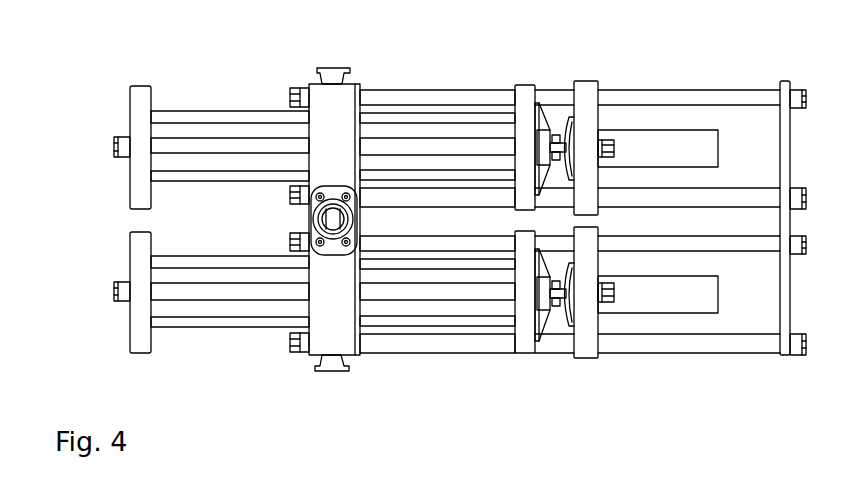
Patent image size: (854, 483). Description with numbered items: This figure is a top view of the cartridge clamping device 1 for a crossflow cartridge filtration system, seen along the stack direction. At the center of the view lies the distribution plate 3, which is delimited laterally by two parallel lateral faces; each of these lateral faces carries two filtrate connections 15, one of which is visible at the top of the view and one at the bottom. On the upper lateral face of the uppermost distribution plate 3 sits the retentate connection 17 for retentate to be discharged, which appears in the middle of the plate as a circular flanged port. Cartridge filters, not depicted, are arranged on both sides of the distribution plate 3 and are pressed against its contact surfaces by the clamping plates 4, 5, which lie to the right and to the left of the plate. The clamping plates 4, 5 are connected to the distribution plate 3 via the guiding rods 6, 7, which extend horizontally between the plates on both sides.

The cartridge clamping device 1 is at (66, 188).
The distribution plate 3 is at (333, 107).
The clamping plate 4 is at (523, 180).
The clamping plate 5 is at (143, 111).
The guiding rod 6 is at (457, 147).
The guiding rod 7 is at (448, 118).
The filtrate connection 15 is at (347, 70).
The retentate connection 17 is at (314, 200).